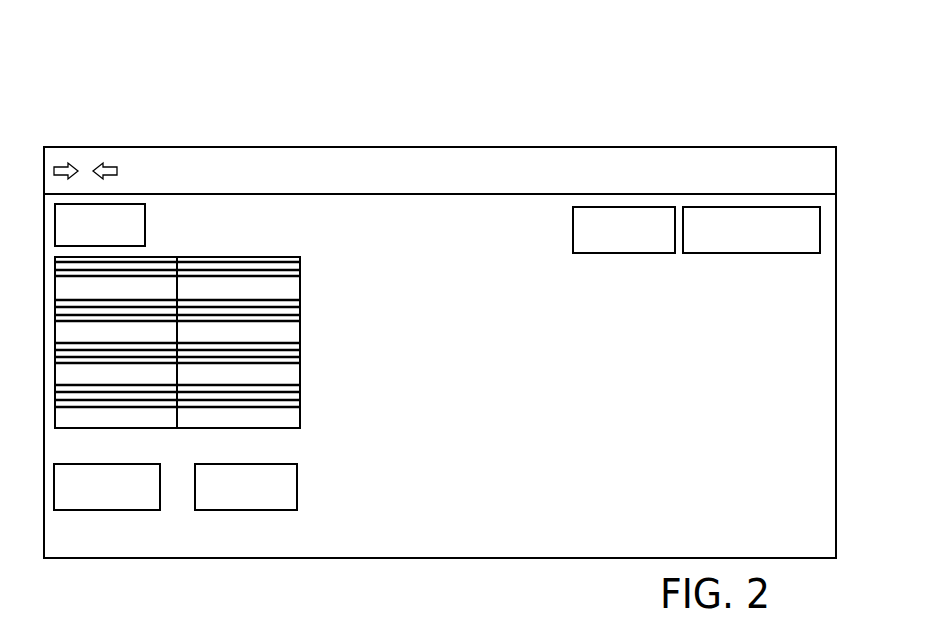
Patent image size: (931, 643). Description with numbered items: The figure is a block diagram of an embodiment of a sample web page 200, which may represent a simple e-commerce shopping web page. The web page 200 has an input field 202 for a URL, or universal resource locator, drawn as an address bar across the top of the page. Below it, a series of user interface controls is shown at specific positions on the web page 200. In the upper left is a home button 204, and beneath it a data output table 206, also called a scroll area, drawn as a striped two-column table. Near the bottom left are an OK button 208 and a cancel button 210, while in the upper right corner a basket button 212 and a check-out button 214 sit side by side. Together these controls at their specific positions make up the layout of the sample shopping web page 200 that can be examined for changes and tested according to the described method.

The sample web page 200 is at (207, 71).
The input field 202 is at (264, 158).
The home button 204 is at (49, 222).
The data output table 206 is at (286, 240).
The OK button 208 is at (76, 524).
The cancel button 210 is at (236, 524).
The basket button 212 is at (626, 205).
The check-out button 214 is at (752, 205).